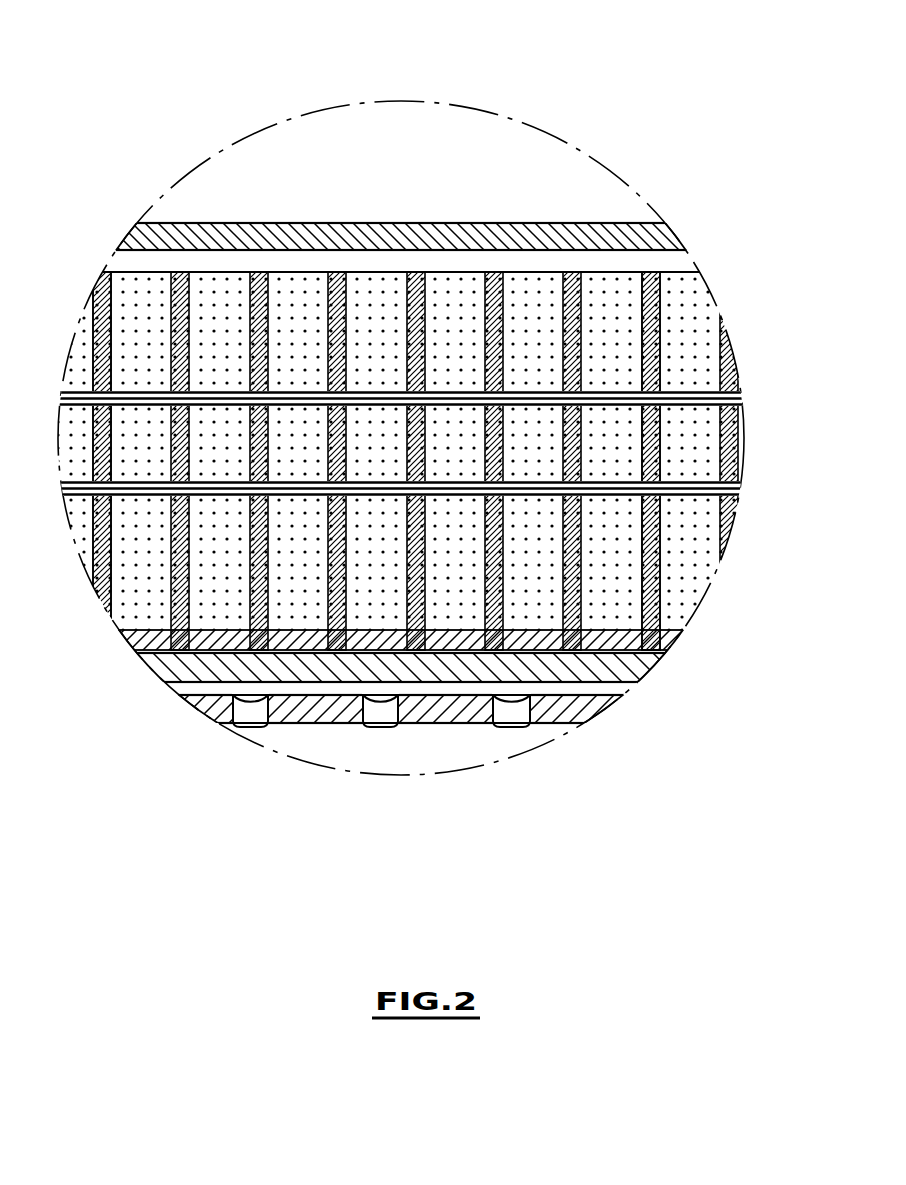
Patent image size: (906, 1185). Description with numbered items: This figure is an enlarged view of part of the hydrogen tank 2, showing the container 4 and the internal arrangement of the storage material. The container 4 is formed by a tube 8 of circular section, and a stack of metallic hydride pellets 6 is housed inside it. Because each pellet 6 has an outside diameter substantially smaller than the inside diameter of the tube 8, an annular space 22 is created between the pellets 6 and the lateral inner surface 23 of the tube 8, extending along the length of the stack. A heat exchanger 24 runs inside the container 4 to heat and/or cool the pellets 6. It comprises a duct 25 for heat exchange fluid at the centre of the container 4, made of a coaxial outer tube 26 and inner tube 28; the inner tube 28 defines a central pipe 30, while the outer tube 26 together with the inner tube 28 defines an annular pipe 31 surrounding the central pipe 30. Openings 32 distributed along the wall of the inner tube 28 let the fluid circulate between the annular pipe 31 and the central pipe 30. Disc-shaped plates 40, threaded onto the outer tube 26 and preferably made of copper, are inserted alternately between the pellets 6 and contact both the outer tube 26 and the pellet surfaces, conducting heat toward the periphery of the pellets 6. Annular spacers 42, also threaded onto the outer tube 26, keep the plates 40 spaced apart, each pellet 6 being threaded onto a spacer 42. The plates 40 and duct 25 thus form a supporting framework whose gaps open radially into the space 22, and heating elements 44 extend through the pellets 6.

The tank 2 is at (228, 95).
The container 4 is at (362, 222).
The pellets 6 is at (615, 320).
The tube 8 is at (490, 280).
The annular space 22 is at (290, 262).
The lateral inner surface 23 is at (212, 255).
The heat exchanger 24 is at (520, 876).
The duct 25 is at (648, 792).
The outer tube 26 is at (622, 665).
The inner tube 28 is at (575, 712).
The central pipe 30 is at (310, 740).
The annular pipe 31 is at (180, 690).
The openings 32 is at (248, 715).
The plates 40 is at (350, 293).
The annular spacers 42 is at (543, 630).
The heating elements 44 is at (733, 394).